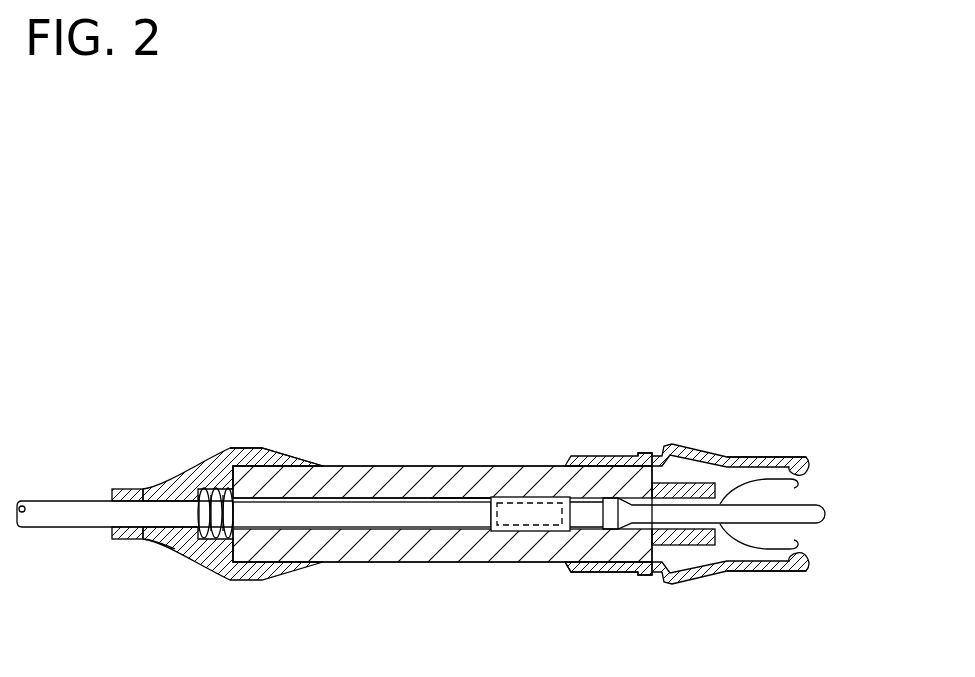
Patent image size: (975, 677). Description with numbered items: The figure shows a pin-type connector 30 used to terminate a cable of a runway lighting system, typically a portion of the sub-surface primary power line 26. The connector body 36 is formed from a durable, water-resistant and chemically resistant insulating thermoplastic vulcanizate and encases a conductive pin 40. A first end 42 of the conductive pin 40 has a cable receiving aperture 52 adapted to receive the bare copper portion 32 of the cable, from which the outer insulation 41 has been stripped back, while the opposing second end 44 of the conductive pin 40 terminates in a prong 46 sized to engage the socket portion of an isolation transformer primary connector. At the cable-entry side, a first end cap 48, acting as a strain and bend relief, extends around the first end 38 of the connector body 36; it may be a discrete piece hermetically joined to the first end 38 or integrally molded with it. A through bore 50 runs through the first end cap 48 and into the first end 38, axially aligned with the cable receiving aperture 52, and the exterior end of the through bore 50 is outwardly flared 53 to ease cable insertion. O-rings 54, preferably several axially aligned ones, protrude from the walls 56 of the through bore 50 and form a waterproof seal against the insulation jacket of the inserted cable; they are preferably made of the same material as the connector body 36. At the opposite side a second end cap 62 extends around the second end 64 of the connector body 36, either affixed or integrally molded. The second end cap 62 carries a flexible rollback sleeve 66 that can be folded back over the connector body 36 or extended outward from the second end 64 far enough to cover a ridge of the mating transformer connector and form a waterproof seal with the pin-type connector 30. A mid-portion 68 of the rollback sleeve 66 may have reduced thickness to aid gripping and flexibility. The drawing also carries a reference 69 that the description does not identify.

The pin-type connector 30 is at (438, 407).
The sub-surface primary power line 26 is at (62, 500).
The outwardly flared exterior end 53 is at (136, 540).
The first end of the connector body 38 is at (247, 546).
The walls of the through bore 56 is at (158, 538).
The O-ring 54 is at (208, 487).
The first end cap 48 is at (230, 446).
The through bore 50 is at (282, 497).
The connector body 36 is at (436, 552).
The outer insulation 41 is at (465, 491).
The bare copper portion 32 is at (487, 534).
The cable receiving aperture 52 is at (517, 505).
The second end of the conductive pin 44 is at (769, 507).
The prong 46 is at (816, 513).
The first end of the conductive pin 42 is at (568, 493).
The second end cap 62 is at (622, 569).
The second end of the connector body 64 is at (638, 480).
The lower tab 69 is at (660, 580).
The conductive pin 40 is at (736, 499).
The rollback sleeve 66 is at (757, 456).
The mid-portion of the rollback sleeve 68 is at (691, 562).